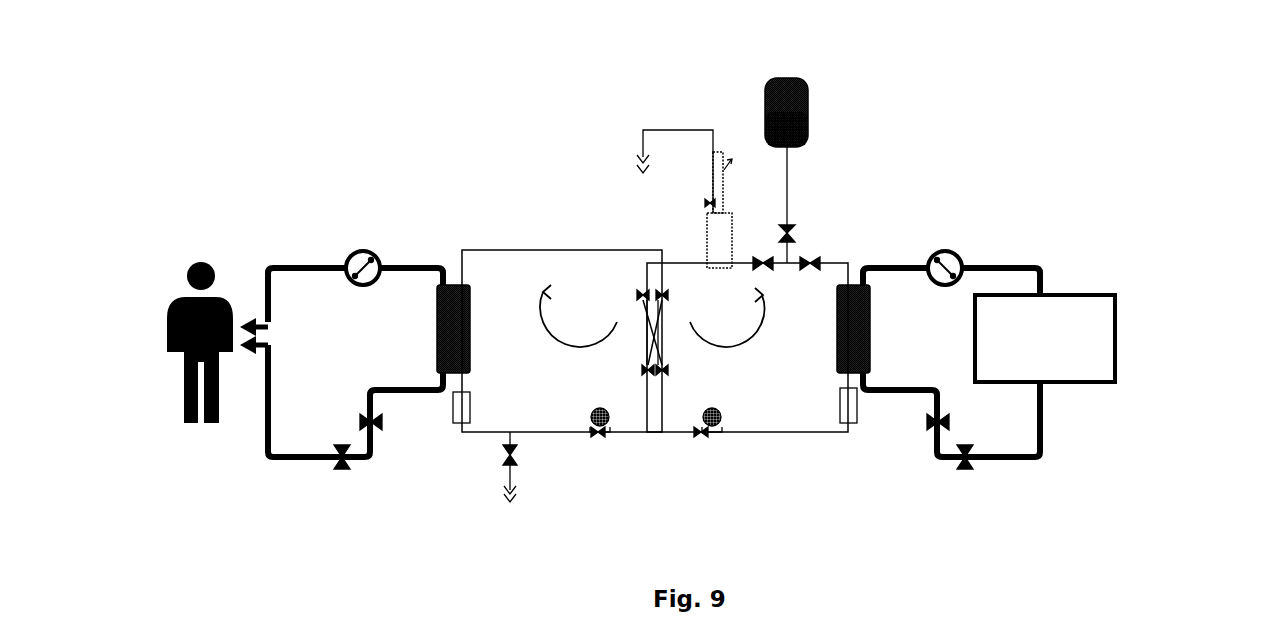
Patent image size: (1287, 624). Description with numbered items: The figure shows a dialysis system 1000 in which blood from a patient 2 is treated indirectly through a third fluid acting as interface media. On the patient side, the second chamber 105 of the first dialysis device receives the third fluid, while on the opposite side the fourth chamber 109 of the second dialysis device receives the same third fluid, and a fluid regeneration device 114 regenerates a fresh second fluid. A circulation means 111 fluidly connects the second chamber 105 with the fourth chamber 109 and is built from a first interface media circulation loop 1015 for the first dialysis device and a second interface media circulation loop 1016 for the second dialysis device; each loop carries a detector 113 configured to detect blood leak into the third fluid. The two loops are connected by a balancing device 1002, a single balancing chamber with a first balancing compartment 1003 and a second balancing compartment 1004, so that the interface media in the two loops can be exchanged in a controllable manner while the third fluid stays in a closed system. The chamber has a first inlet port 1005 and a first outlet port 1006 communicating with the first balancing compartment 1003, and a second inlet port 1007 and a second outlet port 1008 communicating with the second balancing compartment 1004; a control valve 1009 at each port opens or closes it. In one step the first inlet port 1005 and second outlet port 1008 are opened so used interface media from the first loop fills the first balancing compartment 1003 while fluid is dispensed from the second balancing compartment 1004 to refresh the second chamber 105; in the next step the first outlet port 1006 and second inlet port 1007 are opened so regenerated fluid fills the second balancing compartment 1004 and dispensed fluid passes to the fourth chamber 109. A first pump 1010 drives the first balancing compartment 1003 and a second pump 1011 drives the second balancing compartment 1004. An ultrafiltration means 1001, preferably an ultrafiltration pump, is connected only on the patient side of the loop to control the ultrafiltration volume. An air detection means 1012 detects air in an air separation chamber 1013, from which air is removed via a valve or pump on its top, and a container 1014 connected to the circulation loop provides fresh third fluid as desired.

The patient 2 is at (182, 345).
The second chamber 105 is at (473, 300).
The fourth chamber 109 is at (847, 317).
The circulation means 111 is at (607, 250).
The detector 113 is at (457, 410).
The fluid regeneration device 114 is at (1090, 342).
The dialysis system 1000 is at (174, 216).
The ultrafiltration means 1001 is at (520, 462).
The balancing device 1002 is at (658, 365).
The first balancing compartment 1003 is at (635, 368).
The second balancing compartment 1004 is at (655, 325).
The first inlet port 1005 is at (655, 325).
The first outlet port 1006 is at (643, 290).
The second inlet port 1007 is at (661, 372).
The second outlet port 1008 is at (663, 290).
The control valve 1009 is at (645, 372).
The first pump 1010 is at (588, 418).
The second pump 1011 is at (727, 424).
The air detection means 1012 is at (730, 207).
The air separation chamber 1013 is at (720, 227).
The container 1014 is at (797, 118).
The first interface media circulation loop 1015 is at (473, 248).
The second interface media circulation loop 1016 is at (828, 435).